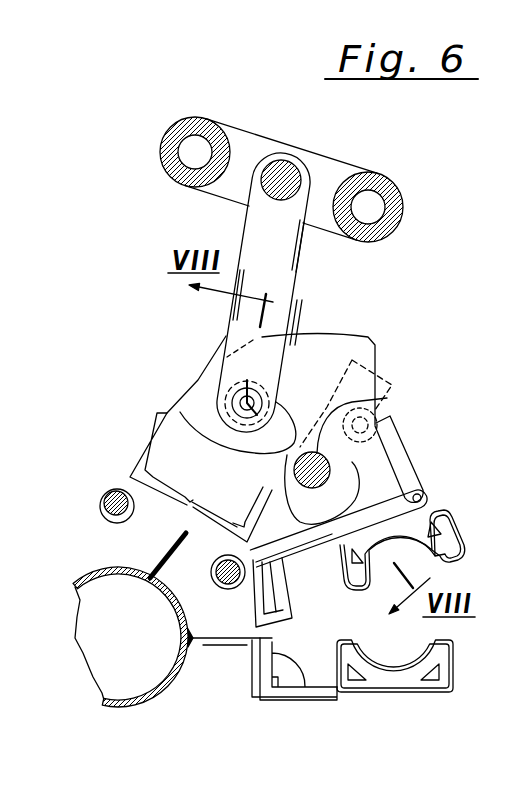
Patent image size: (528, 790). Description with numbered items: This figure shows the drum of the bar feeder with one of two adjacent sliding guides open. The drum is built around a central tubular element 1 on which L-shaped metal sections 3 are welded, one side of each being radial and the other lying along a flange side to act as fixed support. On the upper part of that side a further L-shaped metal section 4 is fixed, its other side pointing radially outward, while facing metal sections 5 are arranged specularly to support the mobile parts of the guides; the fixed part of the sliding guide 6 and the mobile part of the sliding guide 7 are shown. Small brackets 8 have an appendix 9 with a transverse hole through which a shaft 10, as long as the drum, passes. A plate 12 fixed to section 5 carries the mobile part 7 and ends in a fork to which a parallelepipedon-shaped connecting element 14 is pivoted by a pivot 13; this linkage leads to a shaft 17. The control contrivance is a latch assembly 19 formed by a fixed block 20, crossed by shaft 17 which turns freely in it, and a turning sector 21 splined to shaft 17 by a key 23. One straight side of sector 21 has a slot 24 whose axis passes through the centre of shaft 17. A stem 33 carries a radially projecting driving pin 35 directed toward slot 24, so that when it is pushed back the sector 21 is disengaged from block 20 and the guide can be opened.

The central tubular element 1 is at (128, 710).
The L-shaped metal sections 3 is at (168, 537).
The metal section 4 is at (302, 660).
The metal sections 5 is at (157, 437).
The fixed parts of the sliding guides 6 is at (455, 670).
The mobile parts of the sliding guides 7 is at (458, 536).
The small brackets 8 is at (247, 637).
The appendix 9 is at (197, 615).
The shaft 10 is at (110, 490).
The plate 12 is at (425, 530).
The pivot 13 is at (423, 497).
The connecting element 14 is at (398, 457).
The shaft 17 is at (385, 398).
The latch assembly 19 is at (373, 314).
The fixed block 20 is at (392, 386).
The turning sector 21 is at (307, 333).
The key 23 is at (262, 477).
The slot 24 is at (185, 428).
The stem 33 is at (284, 172).
The driving pin 35 is at (250, 243).